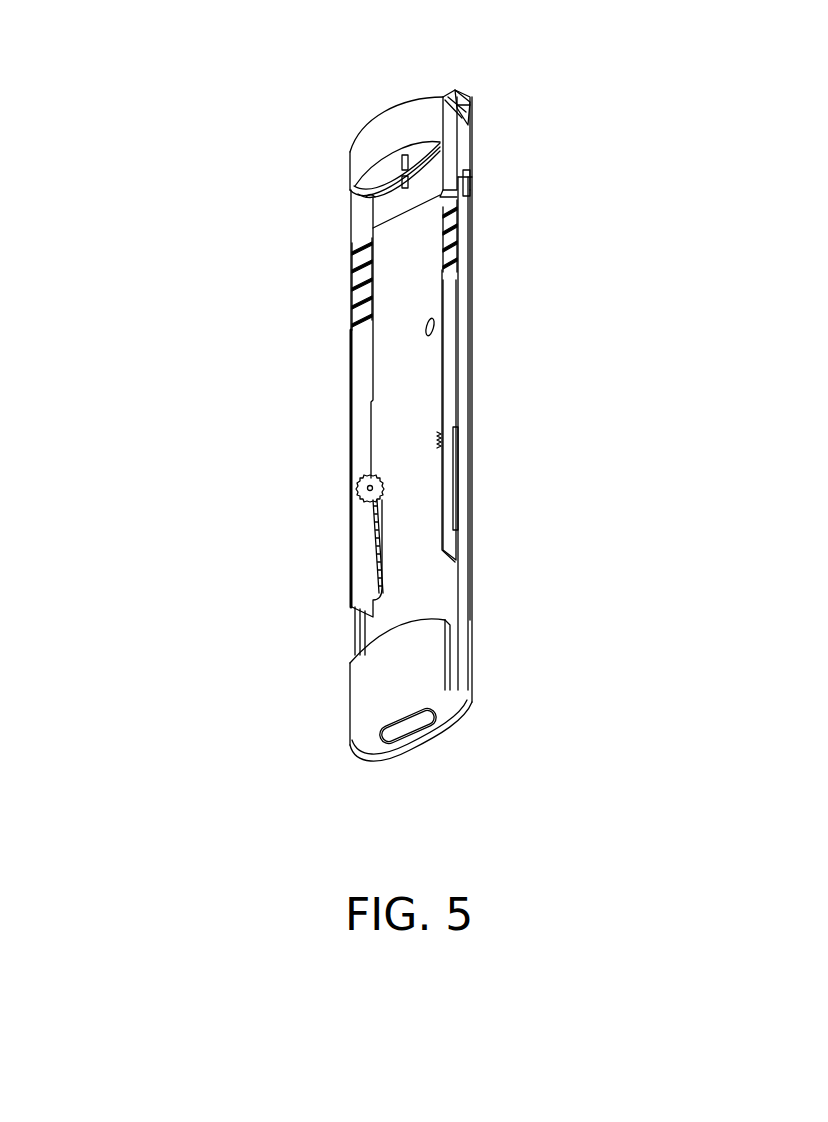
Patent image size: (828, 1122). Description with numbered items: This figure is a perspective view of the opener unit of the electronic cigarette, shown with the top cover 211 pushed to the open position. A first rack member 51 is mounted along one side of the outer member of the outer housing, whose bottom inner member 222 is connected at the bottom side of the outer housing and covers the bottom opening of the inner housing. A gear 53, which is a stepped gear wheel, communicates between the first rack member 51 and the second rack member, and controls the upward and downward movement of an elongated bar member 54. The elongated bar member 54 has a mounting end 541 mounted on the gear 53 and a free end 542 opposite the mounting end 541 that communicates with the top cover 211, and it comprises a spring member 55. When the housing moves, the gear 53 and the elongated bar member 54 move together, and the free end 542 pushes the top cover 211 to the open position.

The free end 542 is at (348, 146).
The top cover 211 is at (472, 107).
The spring member 55 is at (350, 282).
The gear 53 is at (360, 487).
The first rack member 51 is at (373, 578).
The elongated bar member 54 is at (450, 352).
The mounting end 541 is at (487, 538).
The bottom inner member 222 is at (410, 668).